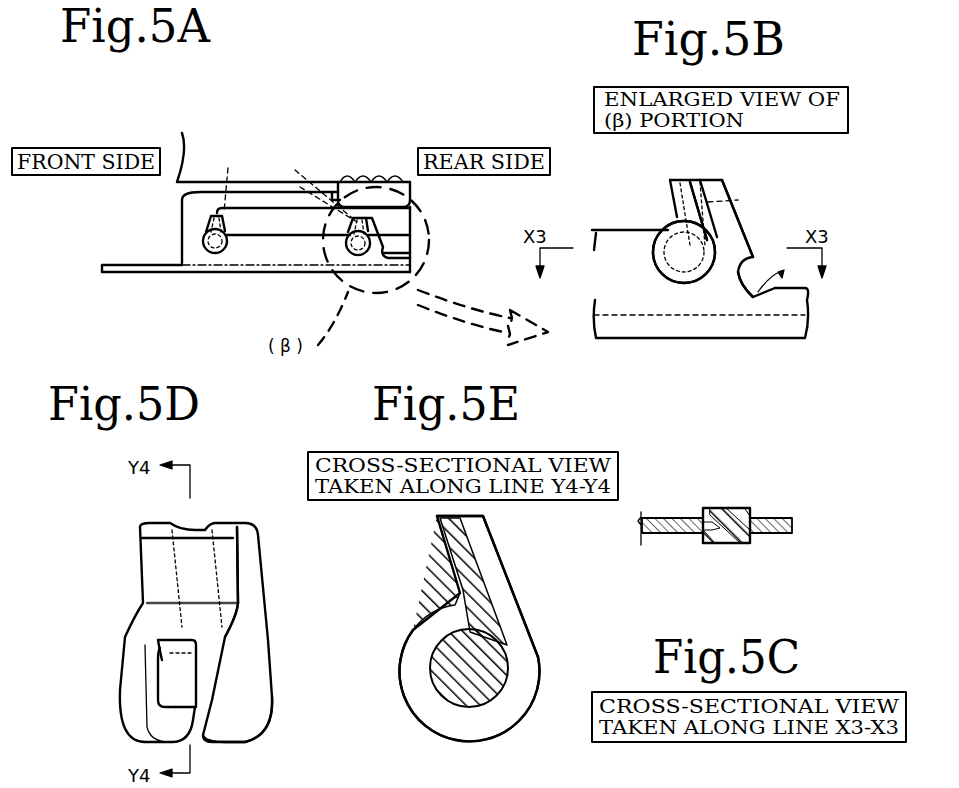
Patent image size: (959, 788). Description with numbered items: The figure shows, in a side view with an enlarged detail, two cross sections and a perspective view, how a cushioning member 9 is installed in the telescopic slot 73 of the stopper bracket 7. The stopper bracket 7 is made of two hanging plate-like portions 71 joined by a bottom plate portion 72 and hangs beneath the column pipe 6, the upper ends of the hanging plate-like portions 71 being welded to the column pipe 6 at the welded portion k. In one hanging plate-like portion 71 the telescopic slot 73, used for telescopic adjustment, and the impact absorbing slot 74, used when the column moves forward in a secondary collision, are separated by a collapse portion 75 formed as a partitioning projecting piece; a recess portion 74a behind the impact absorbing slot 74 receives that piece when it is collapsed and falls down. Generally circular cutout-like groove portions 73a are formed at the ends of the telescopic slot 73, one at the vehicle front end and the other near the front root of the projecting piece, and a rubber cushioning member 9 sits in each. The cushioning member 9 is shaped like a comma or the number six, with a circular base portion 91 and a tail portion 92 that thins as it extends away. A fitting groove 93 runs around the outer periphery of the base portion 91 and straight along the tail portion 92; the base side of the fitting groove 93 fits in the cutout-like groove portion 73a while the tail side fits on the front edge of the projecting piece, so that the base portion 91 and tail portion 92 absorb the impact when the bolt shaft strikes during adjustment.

In FIG. 5A, the column pipe 6 is at (178, 196).
In FIG. 5A, the stopper bracket 7 is at (202, 284).
In FIG. 5A, the hanging plate-like portion 71 is at (182, 245).
In FIG. 5B, the hanging plate-like portion 71 is at (792, 303).
In FIG. 5C, the hanging plate-like portion 71 is at (667, 535).
In FIG. 5A, the bottom plate portion 72 is at (300, 277).
In FIG. 5A, the telescopic slot 73 is at (252, 228).
In FIG. 5B, the telescopic slot 73 is at (639, 216).
In FIG. 5A, the cutout-like groove portion 73a is at (287, 184).
In FIG. 5B, the cutout-like groove portion 73a is at (677, 222).
In FIG. 5C, the cutout-like groove portion 73a is at (720, 528).
In FIG. 5A, the impact absorbing slot 74 is at (422, 237).
In FIG. 5B, the impact absorbing slot 74 is at (767, 234).
In FIG. 5A, the recess portion 74a is at (397, 247).
In FIG. 5B, the recess portion 74a is at (753, 298).
In FIG. 5A, the collapse portion 75 is at (400, 213).
In FIG. 5B, the collapse portion 75 is at (723, 181).
In FIG. 5A, the cushioning member 9 is at (218, 258).
In FIG. 5B, the cushioning member 9 is at (700, 280).
In FIG. 5D, the cushioning member 9 is at (268, 618).
In FIG. 5E, the cushioning member 9 is at (522, 606).
In FIG. 5C, the cushioning member 9 is at (732, 545).
In FIG. 5B, the base portion 91 is at (677, 277).
In FIG. 5D, the base portion 91 is at (242, 742).
In FIG. 5E, the base portion 91 is at (400, 688).
In FIG. 5B, the tail portion 92 is at (700, 226).
In FIG. 5D, the tail portion 92 is at (252, 552).
In FIG. 5E, the tail portion 92 is at (492, 537).
In FIG. 5B, the fitting groove 93 is at (620, 373).
In FIG. 5D, the fitting groove 93 is at (198, 525).
In FIG. 5E, the fitting groove 93 is at (485, 583).
In FIG. 5C, the fitting groove 93 is at (757, 528).
In FIG. 5A, the welded portion k is at (376, 172).